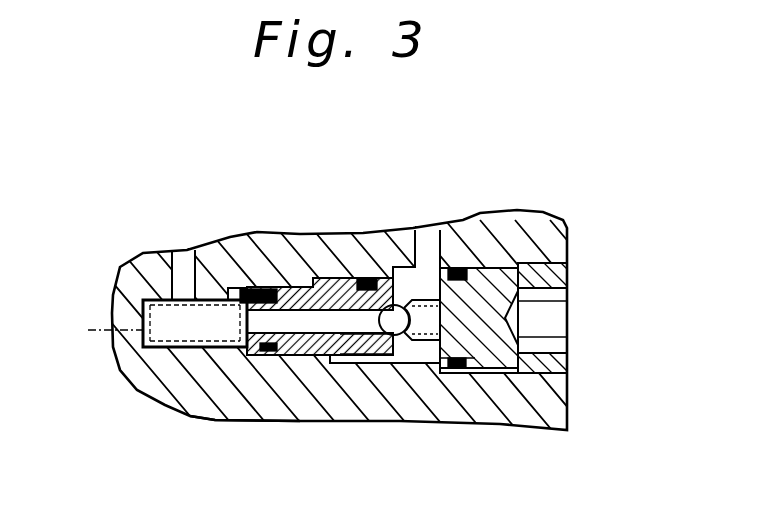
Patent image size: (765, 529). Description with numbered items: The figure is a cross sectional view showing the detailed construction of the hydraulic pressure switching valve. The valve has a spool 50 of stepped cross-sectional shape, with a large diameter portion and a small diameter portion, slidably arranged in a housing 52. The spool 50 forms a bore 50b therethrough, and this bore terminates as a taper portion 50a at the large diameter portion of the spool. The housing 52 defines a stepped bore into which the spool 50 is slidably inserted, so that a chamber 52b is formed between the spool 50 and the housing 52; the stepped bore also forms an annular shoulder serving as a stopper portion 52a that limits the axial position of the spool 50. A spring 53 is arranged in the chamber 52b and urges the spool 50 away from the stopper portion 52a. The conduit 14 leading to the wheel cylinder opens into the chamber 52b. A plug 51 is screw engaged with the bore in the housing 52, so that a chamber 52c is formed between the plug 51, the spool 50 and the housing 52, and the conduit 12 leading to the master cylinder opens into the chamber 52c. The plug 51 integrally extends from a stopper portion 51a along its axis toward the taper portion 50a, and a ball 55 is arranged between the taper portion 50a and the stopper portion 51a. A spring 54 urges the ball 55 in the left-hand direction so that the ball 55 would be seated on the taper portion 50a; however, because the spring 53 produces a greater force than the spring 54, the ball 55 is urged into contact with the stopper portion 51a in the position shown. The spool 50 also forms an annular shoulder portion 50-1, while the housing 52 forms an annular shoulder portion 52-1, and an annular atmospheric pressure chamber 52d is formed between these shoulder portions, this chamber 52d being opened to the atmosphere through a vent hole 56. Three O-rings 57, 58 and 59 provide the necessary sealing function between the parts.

The conduit 12 is at (427, 238).
The conduit 14 is at (182, 262).
The spool 50 is at (306, 357).
The annular shoulder portion 50-1 is at (365, 357).
The taper portion 50a is at (390, 278).
The bore 50b is at (250, 290).
The plug 51 is at (553, 280).
The stopper portion 51a is at (440, 323).
The housing 52 is at (152, 376).
The annular shoulder portion 52-1 is at (272, 288).
The stopper portion 52a is at (218, 356).
The chamber 52b is at (180, 323).
The chamber 52c is at (402, 268).
The atmospheric pressure chamber 52d is at (330, 275).
The spring 53 is at (99, 330).
The spring 54 is at (500, 405).
The ball 55 is at (456, 372).
The vent hole 56 is at (318, 277).
The O-ring 57 is at (267, 356).
The O-ring 58 is at (414, 350).
The O-ring 59 is at (461, 268).